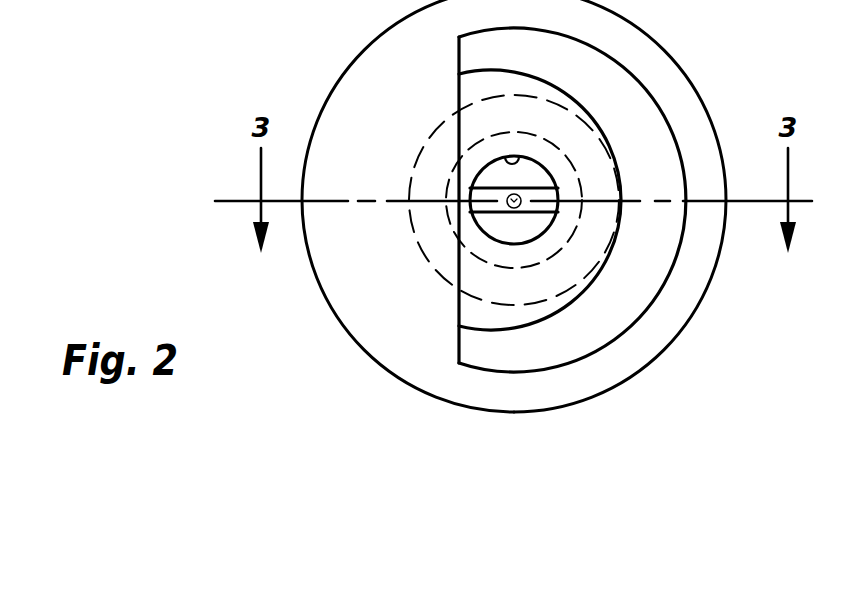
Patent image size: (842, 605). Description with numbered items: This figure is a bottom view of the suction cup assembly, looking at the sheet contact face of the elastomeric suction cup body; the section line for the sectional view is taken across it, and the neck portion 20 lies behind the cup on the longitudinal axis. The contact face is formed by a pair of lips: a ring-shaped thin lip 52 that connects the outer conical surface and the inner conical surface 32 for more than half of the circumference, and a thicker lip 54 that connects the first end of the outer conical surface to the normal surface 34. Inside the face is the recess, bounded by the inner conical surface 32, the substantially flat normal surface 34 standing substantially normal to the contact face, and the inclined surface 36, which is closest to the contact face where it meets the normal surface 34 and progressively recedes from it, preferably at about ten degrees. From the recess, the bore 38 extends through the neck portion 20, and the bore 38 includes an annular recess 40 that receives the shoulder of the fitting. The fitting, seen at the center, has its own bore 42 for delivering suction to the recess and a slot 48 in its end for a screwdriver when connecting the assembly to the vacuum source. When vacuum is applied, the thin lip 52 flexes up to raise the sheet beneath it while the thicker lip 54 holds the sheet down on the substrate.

The neck portion 20 is at (425, 162).
The inner conical surface 32 is at (572, 200).
The normal surface 34 is at (463, 62).
The inclined surface 36 is at (470, 315).
The bore 38 is at (525, 150).
The annular recess 40 is at (482, 142).
The fitting bore 42 is at (528, 186).
The slot 48 is at (562, 190).
The thin lip 52 is at (719, 271).
The thicker lip 54 is at (408, 334).